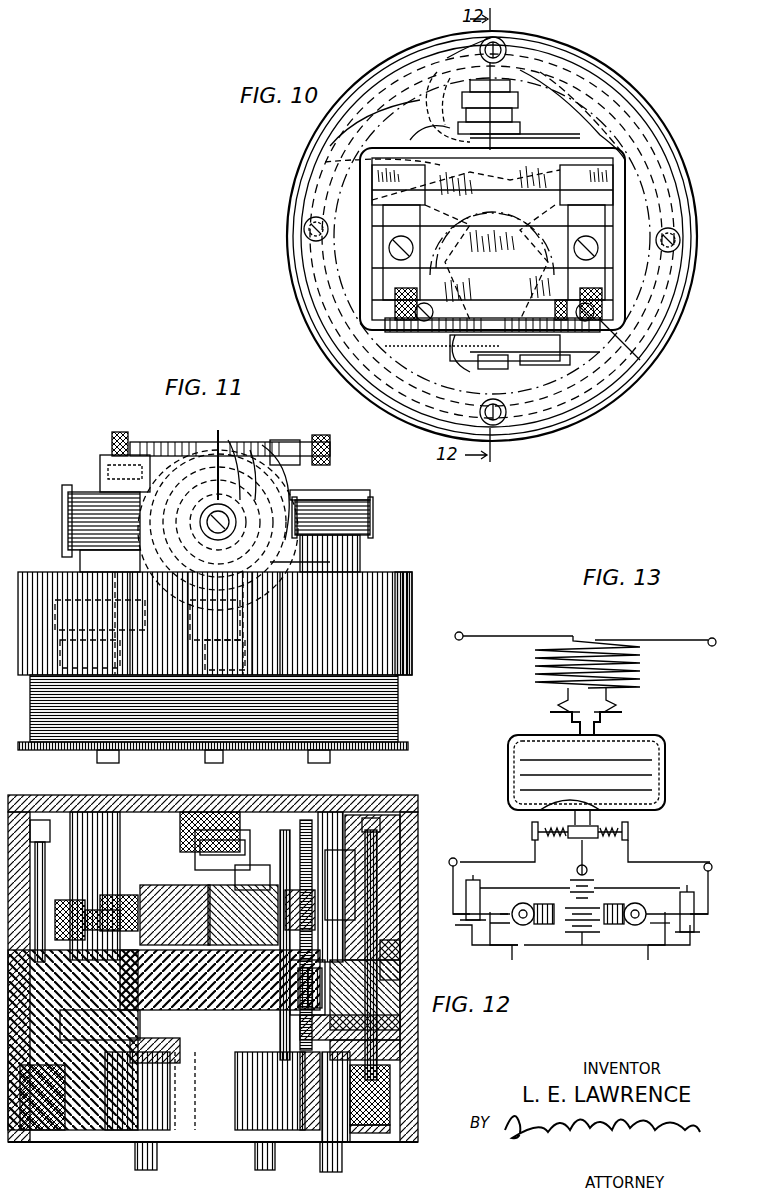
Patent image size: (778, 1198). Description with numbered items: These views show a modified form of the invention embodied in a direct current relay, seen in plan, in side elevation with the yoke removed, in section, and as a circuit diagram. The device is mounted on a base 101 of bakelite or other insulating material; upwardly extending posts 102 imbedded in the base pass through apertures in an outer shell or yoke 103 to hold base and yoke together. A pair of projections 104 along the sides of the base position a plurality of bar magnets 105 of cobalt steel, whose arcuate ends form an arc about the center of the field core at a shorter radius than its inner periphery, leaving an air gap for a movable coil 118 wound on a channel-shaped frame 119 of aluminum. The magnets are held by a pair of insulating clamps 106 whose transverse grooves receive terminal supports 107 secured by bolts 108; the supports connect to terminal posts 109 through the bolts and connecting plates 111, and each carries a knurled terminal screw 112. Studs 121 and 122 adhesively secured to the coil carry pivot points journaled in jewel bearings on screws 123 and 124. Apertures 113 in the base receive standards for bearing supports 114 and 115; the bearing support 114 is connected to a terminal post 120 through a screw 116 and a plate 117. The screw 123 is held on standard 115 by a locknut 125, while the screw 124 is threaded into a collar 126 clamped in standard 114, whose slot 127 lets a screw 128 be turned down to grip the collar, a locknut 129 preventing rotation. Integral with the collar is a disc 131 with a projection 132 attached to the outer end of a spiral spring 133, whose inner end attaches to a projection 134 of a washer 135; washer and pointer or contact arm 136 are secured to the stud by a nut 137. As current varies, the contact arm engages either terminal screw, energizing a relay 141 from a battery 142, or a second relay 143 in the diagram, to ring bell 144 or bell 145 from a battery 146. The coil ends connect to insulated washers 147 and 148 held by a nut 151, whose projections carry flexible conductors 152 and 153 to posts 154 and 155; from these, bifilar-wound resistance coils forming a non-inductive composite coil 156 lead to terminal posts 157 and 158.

In FIG. 11, the base 101 is at (398, 588).
In FIG. 12, the base 101 is at (412, 1070).
In FIG. 10, the posts 102 is at (518, 45).
In FIG. 12, the posts 102 is at (20, 800).
In FIG. 10, the outer shell or yoke 103 is at (337, 146).
In FIG. 12, the outer shell or yoke 103 is at (402, 980).
In FIG. 12, the projections 104 is at (122, 896).
In FIG. 11, the bar magnets 105 is at (80, 493).
In FIG. 12, the bar magnets 105 is at (148, 888).
In FIG. 10, the clamps 106 is at (374, 170).
In FIG. 11, the clamps 106 is at (110, 456).
In FIG. 12, the clamps 106 is at (225, 885).
In FIG. 10, the terminal supports 107 is at (600, 282).
In FIG. 11, the terminal supports 107 is at (150, 438).
In FIG. 12, the terminal supports 107 is at (232, 830).
In FIG. 10, the bolts 108 is at (386, 212).
In FIG. 12, the bolts 108 is at (198, 812).
In FIG. 10, the terminal posts 109 is at (387, 334).
In FIG. 11, the terminal posts 109 is at (136, 752).
In FIG. 12, the terminal posts 109 is at (255, 1162).
In FIG. 13, the terminal posts 109 is at (463, 862).
In FIG. 10, the connecting plates 111 is at (386, 318).
In FIG. 12, the connecting plates 111 is at (240, 1055).
In FIG. 10, the terminal screws 112 is at (628, 366).
In FIG. 11, the terminal screws 112 is at (325, 434).
In FIG. 13, the terminal screws 112 is at (530, 830).
In FIG. 12, the apertures 113 is at (402, 1030).
In FIG. 11, the bearing support 114 is at (192, 618).
In FIG. 12, the bearing support 114 is at (402, 1048).
In FIG. 12, the bearing support 115 is at (130, 1095).
In FIG. 13, the bearing support 115 is at (575, 874).
In FIG. 12, the screw 116 is at (300, 1090).
In FIG. 12, the plate 117 is at (280, 1080).
In FIG. 10, the movable coil 118 is at (620, 250).
In FIG. 11, the movable coil 118 is at (372, 518).
In FIG. 13, the movable coil 118 is at (660, 780).
In FIG. 11, the channel-shaped frame 119 is at (355, 494).
In FIG. 12, the channel-shaped frame 119 is at (105, 910).
In FIG. 11, the terminal post 120 is at (214, 752).
In FIG. 12, the terminal post 120 is at (344, 1152).
In FIG. 12, the stud 121 is at (88, 905).
In FIG. 12, the stud 122 is at (253, 874).
In FIG. 12, the screw 123 is at (88, 838).
In FIG. 12, the screw 124 is at (400, 950).
In FIG. 12, the locknut 125 is at (55, 835).
In FIG. 12, the collar 126 is at (332, 855).
In FIG. 11, the slot 127 is at (286, 446).
In FIG. 10, the screw 128 is at (480, 370).
In FIG. 11, the screw 128 is at (252, 452).
In FIG. 12, the locknut 129 is at (405, 860).
In FIG. 10, the disc 131 is at (540, 368).
In FIG. 11, the disc 131 is at (330, 563).
In FIG. 12, the disc 131 is at (378, 830).
In FIG. 10, the projection 132 is at (470, 360).
In FIG. 11, the projection 132 is at (230, 440).
In FIG. 12, the projection 132 is at (335, 830).
In FIG. 10, the spiral spring 133 is at (548, 362).
In FIG. 11, the spiral spring 133 is at (190, 582).
In FIG. 12, the spiral spring 133 is at (310, 820).
In FIG. 12, the projection 134 is at (306, 987).
In FIG. 12, the washer 135 is at (292, 892).
In FIG. 10, the pointer or contact arm 136 is at (470, 337).
In FIG. 11, the pointer or contact arm 136 is at (218, 442).
In FIG. 12, the pointer or contact arm 136 is at (285, 830).
In FIG. 13, the pointer or contact arm 136 is at (530, 808).
In FIG. 12, the nut 137 is at (318, 1012).
In FIG. 13, the relay 141 is at (486, 892).
In FIG. 13, the relay 142 is at (600, 882).
In FIG. 13, the relay coil 143 is at (687, 888).
In FIG. 13, the bell 144 is at (524, 925).
In FIG. 13, the bell 145 is at (636, 925).
In FIG. 13, the battery 146 is at (583, 948).
In FIG. 10, the washer 147 is at (565, 140).
In FIG. 10, the washer 148 is at (447, 58).
In FIG. 10, the nut 151 is at (500, 62).
In FIG. 10, the flexible conductor 152 is at (518, 128).
In FIG. 13, the flexible conductor 152 is at (622, 714).
In FIG. 10, the flexible conductor 153 is at (437, 126).
In FIG. 13, the flexible conductor 153 is at (552, 714).
In FIG. 10, the post 154 is at (625, 100).
In FIG. 12, the post 154 is at (175, 1040).
In FIG. 13, the post 154 is at (616, 705).
In FIG. 10, the post 155 is at (420, 145).
In FIG. 13, the post 155 is at (560, 705).
In FIG. 11, the composite coil 156 is at (398, 700).
In FIG. 12, the composite coil 156 is at (404, 1110).
In FIG. 13, the composite coil 156 is at (640, 672).
In FIG. 10, the terminal post 157 is at (648, 140).
In FIG. 12, the terminal post 157 is at (158, 1160).
In FIG. 13, the terminal post 157 is at (714, 638).
In FIG. 10, the terminal post 158 is at (325, 162).
In FIG. 13, the terminal post 158 is at (461, 632).